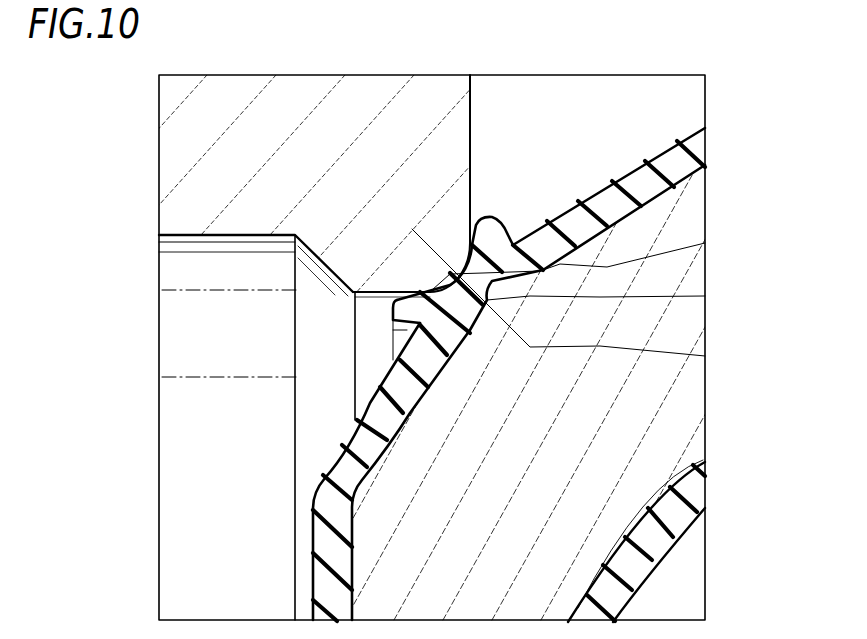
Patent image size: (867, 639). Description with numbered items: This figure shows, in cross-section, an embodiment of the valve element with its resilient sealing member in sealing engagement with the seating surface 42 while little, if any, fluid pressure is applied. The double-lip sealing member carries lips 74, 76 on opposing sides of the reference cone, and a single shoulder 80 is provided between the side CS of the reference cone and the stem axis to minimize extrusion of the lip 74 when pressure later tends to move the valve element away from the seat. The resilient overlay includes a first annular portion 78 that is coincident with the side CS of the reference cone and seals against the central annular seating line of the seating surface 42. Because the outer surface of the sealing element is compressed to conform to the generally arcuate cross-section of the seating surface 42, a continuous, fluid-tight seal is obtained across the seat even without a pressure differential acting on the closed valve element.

The seating surface 42 is at (395, 330).
The lip 74 is at (395, 299).
The lip 76 is at (499, 212).
The first annular portion 78 is at (705, 243).
The single shoulder 80 is at (705, 296).
The side of the reference cone CS is at (705, 356).